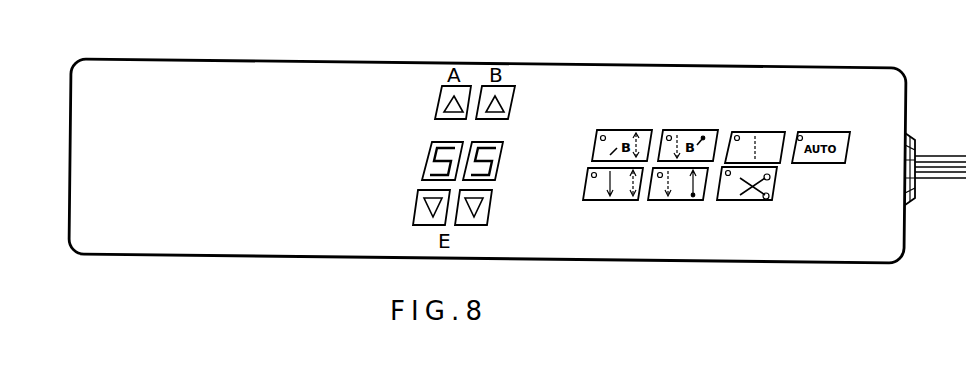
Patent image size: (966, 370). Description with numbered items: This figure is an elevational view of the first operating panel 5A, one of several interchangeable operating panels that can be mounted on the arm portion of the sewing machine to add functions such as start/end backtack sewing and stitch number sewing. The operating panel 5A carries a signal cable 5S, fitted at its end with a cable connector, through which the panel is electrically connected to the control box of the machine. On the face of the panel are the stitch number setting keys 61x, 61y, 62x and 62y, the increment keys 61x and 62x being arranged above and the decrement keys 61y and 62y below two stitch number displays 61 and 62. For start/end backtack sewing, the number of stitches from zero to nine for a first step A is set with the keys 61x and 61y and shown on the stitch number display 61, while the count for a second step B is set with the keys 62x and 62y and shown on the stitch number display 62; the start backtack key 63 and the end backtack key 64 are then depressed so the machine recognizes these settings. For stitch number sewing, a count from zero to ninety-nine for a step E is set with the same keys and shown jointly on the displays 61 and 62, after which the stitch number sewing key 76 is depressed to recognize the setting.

The operating panel 5A is at (376, 72).
The signal cable 5S is at (948, 165).
The stitch number display 61 is at (424, 168).
The stitch number setting key 61x is at (437, 94).
The stitch number setting key 61y is at (417, 205).
The stitch number display 62 is at (501, 162).
The stitch number setting key 62x is at (512, 95).
The stitch number setting key 62y is at (490, 205).
The start backtack key 63 is at (597, 200).
The end backtack key 64 is at (660, 200).
The stitch number sewing key 76 is at (749, 137).